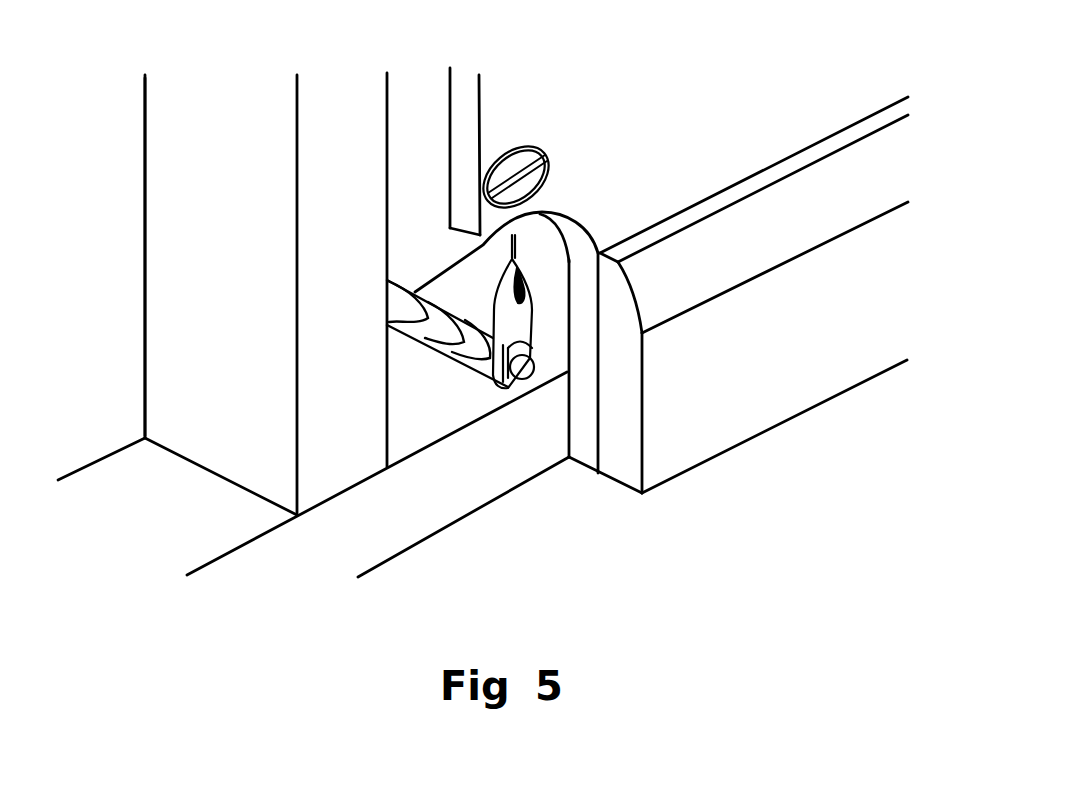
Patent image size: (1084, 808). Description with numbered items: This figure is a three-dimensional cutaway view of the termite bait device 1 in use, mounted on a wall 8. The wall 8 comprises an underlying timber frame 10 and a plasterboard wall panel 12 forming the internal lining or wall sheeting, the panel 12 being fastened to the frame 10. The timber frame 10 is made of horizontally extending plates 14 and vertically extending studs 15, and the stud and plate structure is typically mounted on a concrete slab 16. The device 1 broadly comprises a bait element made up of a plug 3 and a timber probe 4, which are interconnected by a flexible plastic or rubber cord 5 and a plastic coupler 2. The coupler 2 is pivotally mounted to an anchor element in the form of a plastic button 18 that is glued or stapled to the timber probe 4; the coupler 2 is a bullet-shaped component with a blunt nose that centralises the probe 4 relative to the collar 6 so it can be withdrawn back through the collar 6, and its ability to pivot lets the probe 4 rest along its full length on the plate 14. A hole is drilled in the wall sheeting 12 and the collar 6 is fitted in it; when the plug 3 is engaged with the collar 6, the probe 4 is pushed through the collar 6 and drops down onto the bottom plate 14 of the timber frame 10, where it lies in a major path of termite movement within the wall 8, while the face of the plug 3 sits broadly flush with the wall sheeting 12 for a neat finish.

The device 1 is at (355, 296).
The coupler 2 is at (493, 297).
The plug 3 is at (522, 160).
The timber probe 4 is at (447, 357).
The cord 5 is at (525, 233).
The collar 6 is at (515, 148).
The wall 8 is at (672, 120).
The timber frame 10 is at (245, 170).
The plasterboard wall panel 12 is at (465, 105).
The plate 14 is at (165, 502).
The stud 15 is at (205, 345).
The concrete slab 16 is at (550, 573).
The button 18 is at (518, 375).